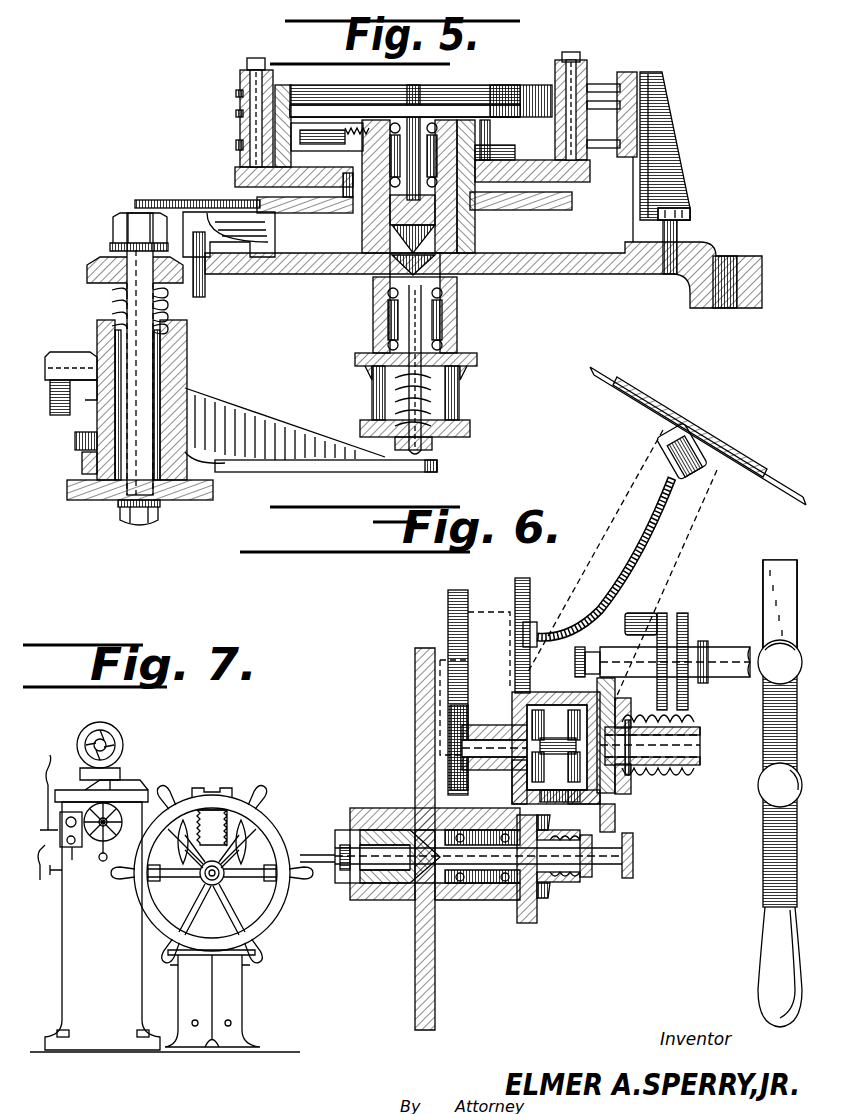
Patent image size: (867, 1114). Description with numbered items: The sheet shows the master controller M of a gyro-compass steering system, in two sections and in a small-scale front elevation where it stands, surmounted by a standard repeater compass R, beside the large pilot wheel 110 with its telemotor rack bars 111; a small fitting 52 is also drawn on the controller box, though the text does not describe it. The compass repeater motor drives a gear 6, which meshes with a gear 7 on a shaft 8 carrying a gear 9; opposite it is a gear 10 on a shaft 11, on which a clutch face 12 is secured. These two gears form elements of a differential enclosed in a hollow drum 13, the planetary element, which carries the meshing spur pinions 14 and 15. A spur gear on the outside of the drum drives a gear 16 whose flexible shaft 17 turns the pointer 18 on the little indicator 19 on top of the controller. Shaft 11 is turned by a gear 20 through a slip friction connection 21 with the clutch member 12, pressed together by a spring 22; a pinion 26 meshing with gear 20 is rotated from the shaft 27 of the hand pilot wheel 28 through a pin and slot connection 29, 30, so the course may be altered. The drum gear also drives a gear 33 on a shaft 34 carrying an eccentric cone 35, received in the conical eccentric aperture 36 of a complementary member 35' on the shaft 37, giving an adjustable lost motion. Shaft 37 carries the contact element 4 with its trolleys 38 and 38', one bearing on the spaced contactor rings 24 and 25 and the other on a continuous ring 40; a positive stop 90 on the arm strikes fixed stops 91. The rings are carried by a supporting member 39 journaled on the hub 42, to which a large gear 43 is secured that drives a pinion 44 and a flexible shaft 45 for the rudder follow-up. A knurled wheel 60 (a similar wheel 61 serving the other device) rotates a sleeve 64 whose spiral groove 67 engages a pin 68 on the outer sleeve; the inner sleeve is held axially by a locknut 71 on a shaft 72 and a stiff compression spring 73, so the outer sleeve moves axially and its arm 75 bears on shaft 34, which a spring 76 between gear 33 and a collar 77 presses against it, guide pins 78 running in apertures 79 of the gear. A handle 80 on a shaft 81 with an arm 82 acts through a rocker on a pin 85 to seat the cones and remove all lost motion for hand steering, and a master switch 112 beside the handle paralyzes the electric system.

In FIG. 5, the contact element 4 is at (422, 118).
In FIG. 6, the gear 6 is at (448, 610).
In FIG. 6, the gear 7 is at (462, 716).
In FIG. 6, the shaft 8 is at (484, 740).
In FIG. 6, the gear 9 is at (528, 782).
In FIG. 6, the gear 10 is at (562, 791).
In FIG. 6, the shaft 11 is at (690, 745).
In FIG. 6, the clutch face 12 is at (605, 706).
In FIG. 6, the hollow drum 13 is at (535, 700).
In FIG. 6, the spur pinion 14 is at (512, 772).
In FIG. 6, the spur pinion 15 is at (512, 692).
In FIG. 6, the gear 16 is at (533, 588).
In FIG. 6, the flexible shaft 17 is at (640, 536).
In FIG. 6, the pointer 18 is at (640, 394).
In FIG. 6, the indicator 19 is at (700, 427).
In FIG. 7, the indicator 19 is at (108, 795).
In FIG. 6, the gear 20 is at (612, 805).
In FIG. 6, the slip friction connection 21 is at (612, 786).
In FIG. 6, the spring 22 is at (690, 716).
In FIG. 5, the contact strip 24 is at (240, 92).
In FIG. 5, the contact strip 25 is at (238, 116).
In FIG. 6, the pinion 26 is at (610, 655).
In FIG. 6, the shaft 27 is at (733, 652).
In FIG. 6, the hand or auxiliary pilot wheel 28 is at (768, 880).
In FIG. 7, the hand or auxiliary pilot wheel 28 is at (108, 805).
In FIG. 6, the pin and slot connection 29 is at (637, 614).
In FIG. 6, the pin and slot connection 30 is at (665, 620).
In FIG. 5, the gear 33 is at (365, 359).
In FIG. 6, the gear 33 is at (527, 916).
In FIG. 5, the shaft 34 is at (425, 451).
In FIG. 6, the shaft 34 is at (633, 856).
In FIG. 5, the cone 35 is at (382, 236).
In FIG. 6, the cone 35 is at (467, 881).
In FIG. 5, the complementary member 35' is at (376, 215).
In FIG. 6, the complementary member 35' is at (435, 831).
In FIG. 5, the conical shaped eccentrically located aperture 36 is at (395, 247).
In FIG. 6, the conical shaped eccentrically located aperture 36 is at (400, 900).
In FIG. 5, the shaft 37 is at (410, 161).
In FIG. 6, the shaft 37 is at (345, 822).
In FIG. 5, the contactor or trolley 38 is at (590, 147).
In FIG. 5, the contactor or trolley 38' is at (294, 136).
In FIG. 5, the supporting member 39 is at (590, 182).
In FIG. 5, the continuous ring 40 is at (238, 150).
In FIG. 5, the hub 42 is at (468, 259).
In FIG. 5, the large gear 43 is at (528, 206).
In FIG. 5, the pinion 44 is at (137, 200).
In FIG. 5, the flexible shaft 45 is at (203, 292).
In FIG. 7, the lamp 52 is at (117, 856).
In FIG. 7, the knurled wheel 60 is at (69, 810).
In FIG. 7, the knurled wheel 61 is at (73, 860).
In FIG. 5, the sleeve 64 is at (165, 408).
In FIG. 5, the spiral groove 67 is at (95, 472).
In FIG. 5, the pin 68 is at (95, 448).
In FIG. 5, the locknut 71 is at (160, 501).
In FIG. 5, the shaft 72 is at (137, 481).
In FIG. 5, the compression spring 73 is at (112, 299).
In FIG. 5, the arm or foot 75 is at (297, 467).
In FIG. 5, the spring 76 is at (455, 398).
In FIG. 6, the spring 76 is at (575, 876).
In FIG. 5, the collar 77 is at (372, 430).
In FIG. 5, the guide pin 78 is at (375, 392).
In FIG. 6, the guide pin 78 is at (560, 882).
In FIG. 5, the aperture 79 is at (462, 354).
In FIG. 7, the handle 80 is at (39, 808).
In FIG. 7, the shaft 81 is at (95, 920).
In FIG. 5, the arm 82 is at (74, 401).
In FIG. 5, the pin 85 is at (47, 356).
In FIG. 5, the positive stop 90 is at (490, 134).
In FIG. 5, the fixed stop 91 is at (505, 158).
In FIG. 7, the pilot wheel 110 is at (268, 912).
In FIG. 7, the telemotor rack bar 111 is at (206, 796).
In FIG. 7, the master switch 112 is at (41, 870).
In FIG. 7, the master controller M is at (102, 914).
In FIG. 7, the repeater compass R is at (115, 756).